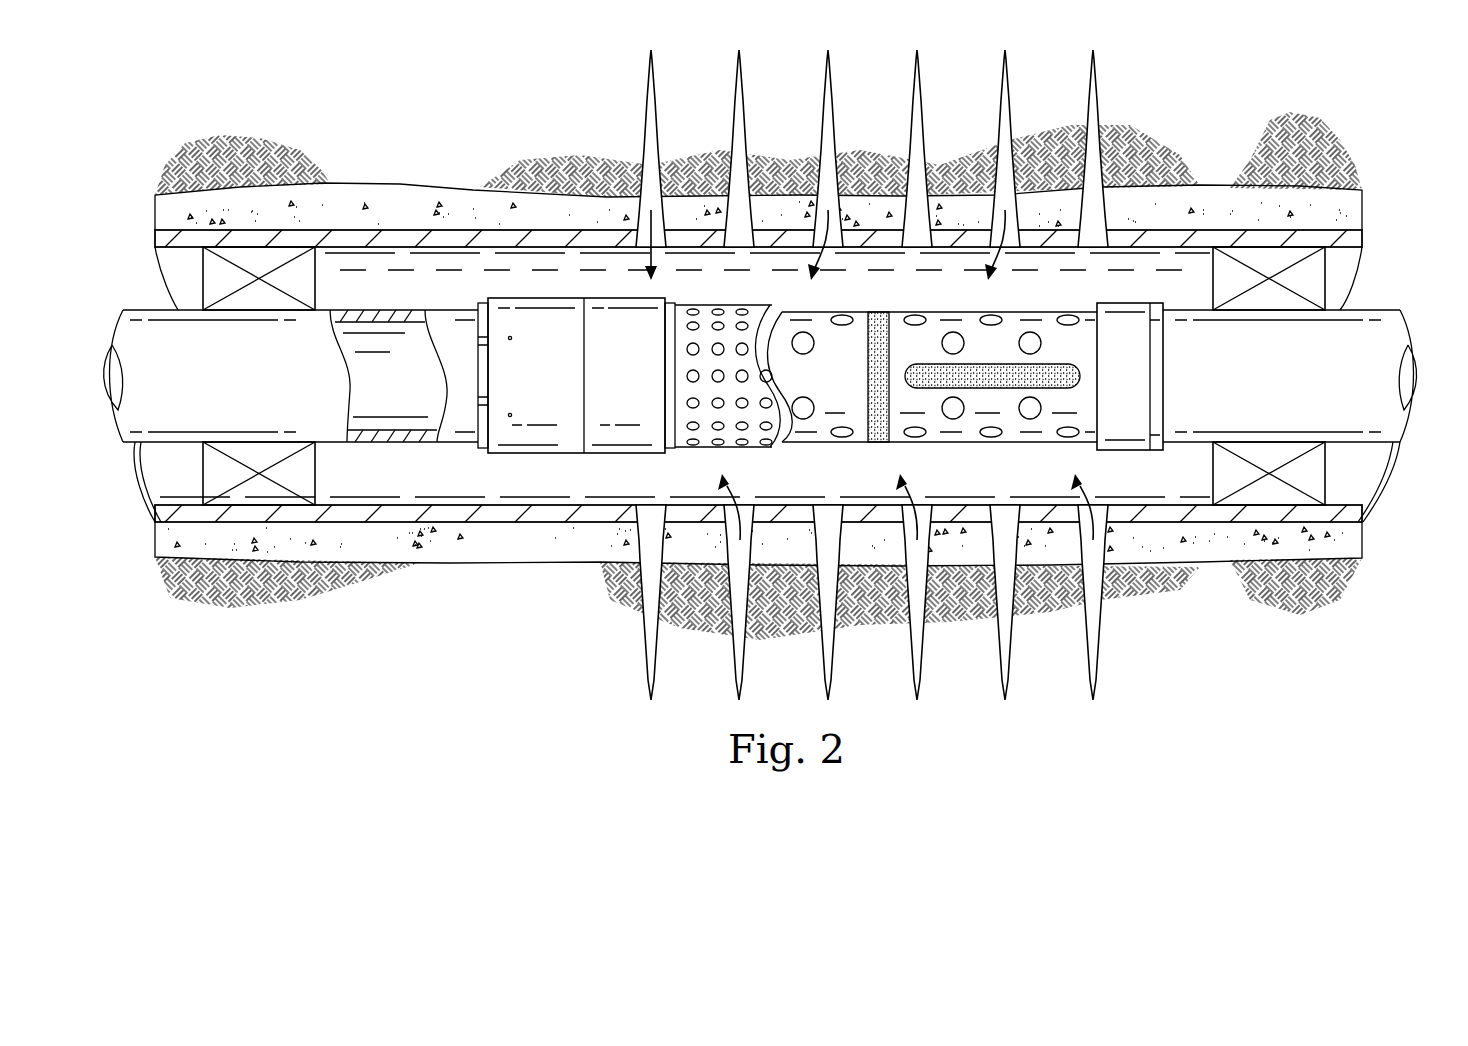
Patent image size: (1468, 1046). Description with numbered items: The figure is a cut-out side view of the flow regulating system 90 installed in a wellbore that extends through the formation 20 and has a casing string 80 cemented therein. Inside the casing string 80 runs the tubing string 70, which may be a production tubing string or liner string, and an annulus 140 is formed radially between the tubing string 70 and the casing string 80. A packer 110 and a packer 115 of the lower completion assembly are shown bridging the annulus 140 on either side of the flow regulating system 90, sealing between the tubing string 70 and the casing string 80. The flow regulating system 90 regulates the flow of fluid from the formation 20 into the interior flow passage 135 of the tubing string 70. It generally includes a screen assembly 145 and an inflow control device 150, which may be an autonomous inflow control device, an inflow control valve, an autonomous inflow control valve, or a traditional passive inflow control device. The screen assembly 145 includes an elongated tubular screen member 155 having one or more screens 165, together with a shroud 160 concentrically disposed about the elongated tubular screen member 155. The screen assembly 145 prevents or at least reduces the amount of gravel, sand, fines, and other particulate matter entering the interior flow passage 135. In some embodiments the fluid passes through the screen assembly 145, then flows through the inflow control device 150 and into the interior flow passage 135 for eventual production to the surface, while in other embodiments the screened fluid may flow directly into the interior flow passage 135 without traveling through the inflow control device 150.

The formation 20 is at (402, 644).
The tubing string 70 is at (1272, 394).
The casing string 80 is at (372, 238).
The flow regulating system 90 is at (553, 130).
The packer 110 is at (205, 287).
The packer 115 is at (1327, 473).
The interior flow passage 135 is at (402, 394).
The annulus 140 is at (1200, 293).
The screen assembly 145 is at (869, 268).
The inflow control device 150 is at (555, 394).
The elongated tubular screen member 155 is at (965, 291).
The shroud 160 is at (733, 303).
The screens 165 is at (1005, 320).